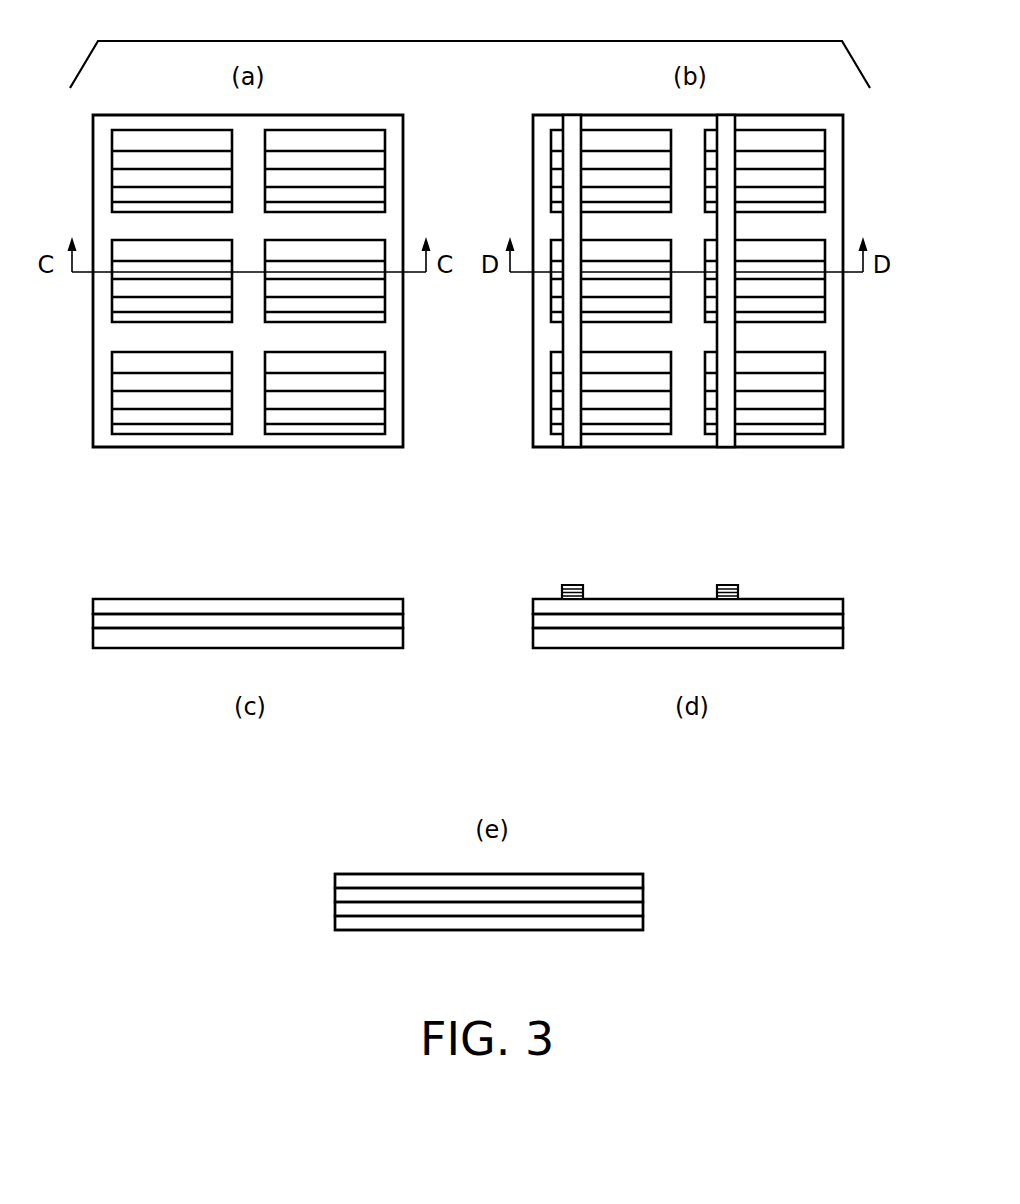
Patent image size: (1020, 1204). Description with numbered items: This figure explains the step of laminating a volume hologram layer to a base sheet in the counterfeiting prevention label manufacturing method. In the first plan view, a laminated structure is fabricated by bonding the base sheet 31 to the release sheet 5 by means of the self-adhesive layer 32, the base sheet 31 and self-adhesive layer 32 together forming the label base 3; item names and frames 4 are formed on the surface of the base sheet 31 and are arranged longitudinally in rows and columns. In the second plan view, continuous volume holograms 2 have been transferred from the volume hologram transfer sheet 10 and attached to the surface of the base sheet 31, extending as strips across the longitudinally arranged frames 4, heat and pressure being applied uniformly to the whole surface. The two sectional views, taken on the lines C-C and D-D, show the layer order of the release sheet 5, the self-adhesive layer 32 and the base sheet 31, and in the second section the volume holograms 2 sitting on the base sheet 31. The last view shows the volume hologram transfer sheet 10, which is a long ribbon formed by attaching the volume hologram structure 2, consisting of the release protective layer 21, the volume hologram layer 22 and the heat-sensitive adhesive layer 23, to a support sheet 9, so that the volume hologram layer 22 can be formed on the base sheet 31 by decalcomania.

The volume hologram structure 2 is at (560, 535).
The label base 3 is at (502, 379).
The frames 4 is at (892, 380).
The release sheet 5 is at (633, 670).
The base sheet 31 is at (634, 608).
The self-adhesive layer 32 is at (664, 623).
The support sheet 9 is at (643, 878).
The release protective layer 21 is at (643, 893).
The volume hologram layer 22 is at (643, 907).
The heat-sensitive adhesive layer 23 is at (527, 935).
The volume hologram transfer sheet 10 is at (655, 838).